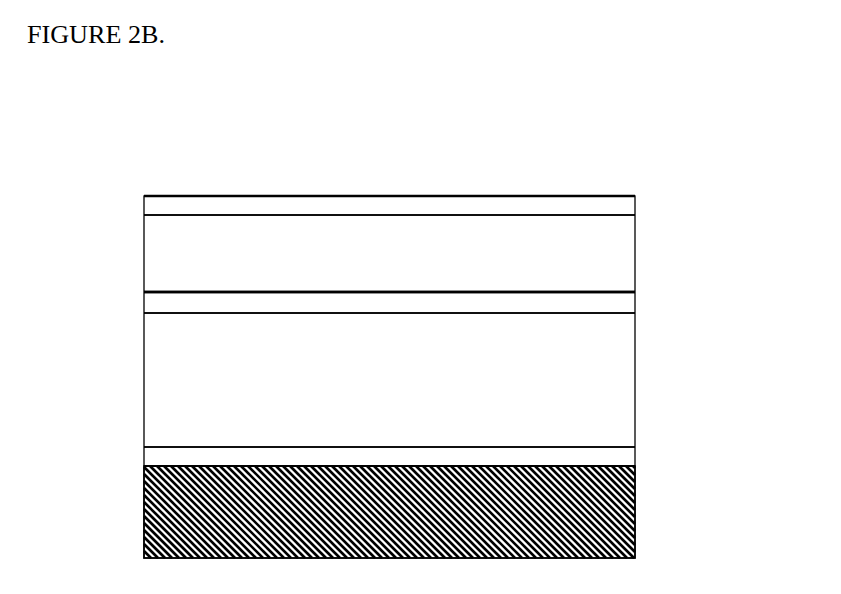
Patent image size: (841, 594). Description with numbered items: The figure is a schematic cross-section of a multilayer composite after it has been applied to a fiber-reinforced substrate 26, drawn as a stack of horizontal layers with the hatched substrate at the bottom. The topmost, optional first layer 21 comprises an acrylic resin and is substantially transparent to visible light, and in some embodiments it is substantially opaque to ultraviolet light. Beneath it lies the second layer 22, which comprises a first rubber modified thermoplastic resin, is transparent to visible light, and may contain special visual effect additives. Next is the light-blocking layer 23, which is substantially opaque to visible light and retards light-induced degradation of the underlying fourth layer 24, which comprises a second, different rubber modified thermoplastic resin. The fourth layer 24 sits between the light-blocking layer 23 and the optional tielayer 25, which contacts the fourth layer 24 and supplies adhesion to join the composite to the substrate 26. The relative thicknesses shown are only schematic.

The first layer 21 is at (629, 188).
The second layer 22 is at (652, 254).
The light-blocking layer 23 is at (652, 300).
The fourth layer 24 is at (652, 411).
The tielayer 25 is at (652, 453).
The fiber-reinforced substrate 26 is at (652, 506).